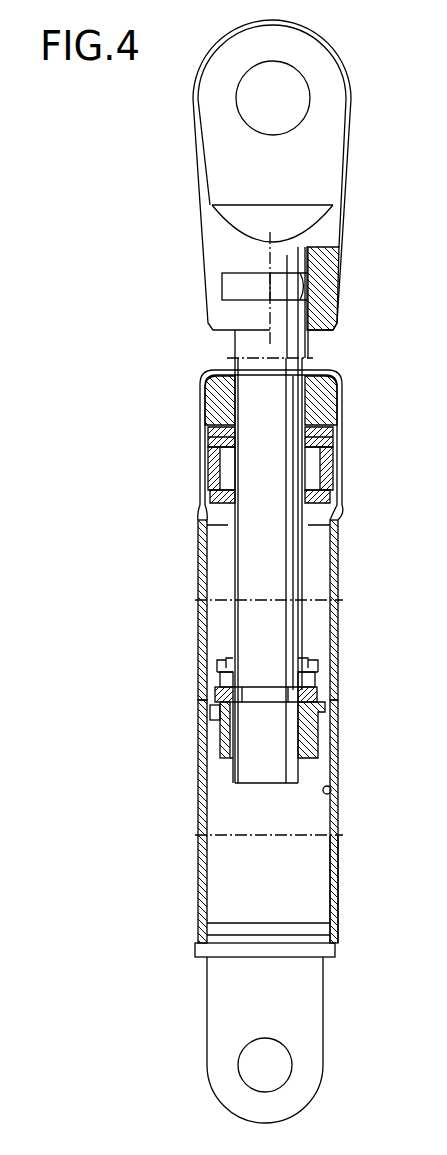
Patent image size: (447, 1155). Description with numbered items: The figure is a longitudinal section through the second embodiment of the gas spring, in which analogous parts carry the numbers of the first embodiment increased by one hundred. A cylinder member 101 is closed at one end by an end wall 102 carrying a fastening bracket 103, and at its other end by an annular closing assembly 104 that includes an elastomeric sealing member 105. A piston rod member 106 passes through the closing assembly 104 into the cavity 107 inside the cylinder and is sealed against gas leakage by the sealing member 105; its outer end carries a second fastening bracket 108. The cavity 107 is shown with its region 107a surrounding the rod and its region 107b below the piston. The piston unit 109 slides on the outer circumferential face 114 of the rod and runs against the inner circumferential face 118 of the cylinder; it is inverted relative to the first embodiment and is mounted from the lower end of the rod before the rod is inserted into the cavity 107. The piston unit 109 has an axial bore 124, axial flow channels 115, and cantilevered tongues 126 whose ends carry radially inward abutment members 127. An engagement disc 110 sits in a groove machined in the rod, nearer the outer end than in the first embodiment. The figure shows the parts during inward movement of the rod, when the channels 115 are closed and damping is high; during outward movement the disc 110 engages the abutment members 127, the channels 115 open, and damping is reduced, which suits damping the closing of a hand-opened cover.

The cylinder member 101 is at (338, 880).
The end wall 102 is at (296, 952).
The fastening bracket 103 is at (308, 1000).
The annular closing assembly 104 is at (333, 393).
The sealing member 105 is at (330, 450).
The piston rod member 106 is at (242, 536).
The cavity 107 is at (272, 731).
The upper cylinder portion 107a is at (313, 558).
The lower cylinder portion 107b is at (225, 888).
The fastening bracket 108 is at (325, 236).
The piston unit 109 is at (315, 728).
The engagement disc 110 is at (313, 697).
The outer circumferential face 114 is at (303, 620).
The flow channels 115 is at (232, 760).
The inner circumferential face 118 is at (331, 790).
The axial bore 124 is at (218, 740).
The tongues 126 is at (222, 681).
The abutment members 127 is at (218, 667).